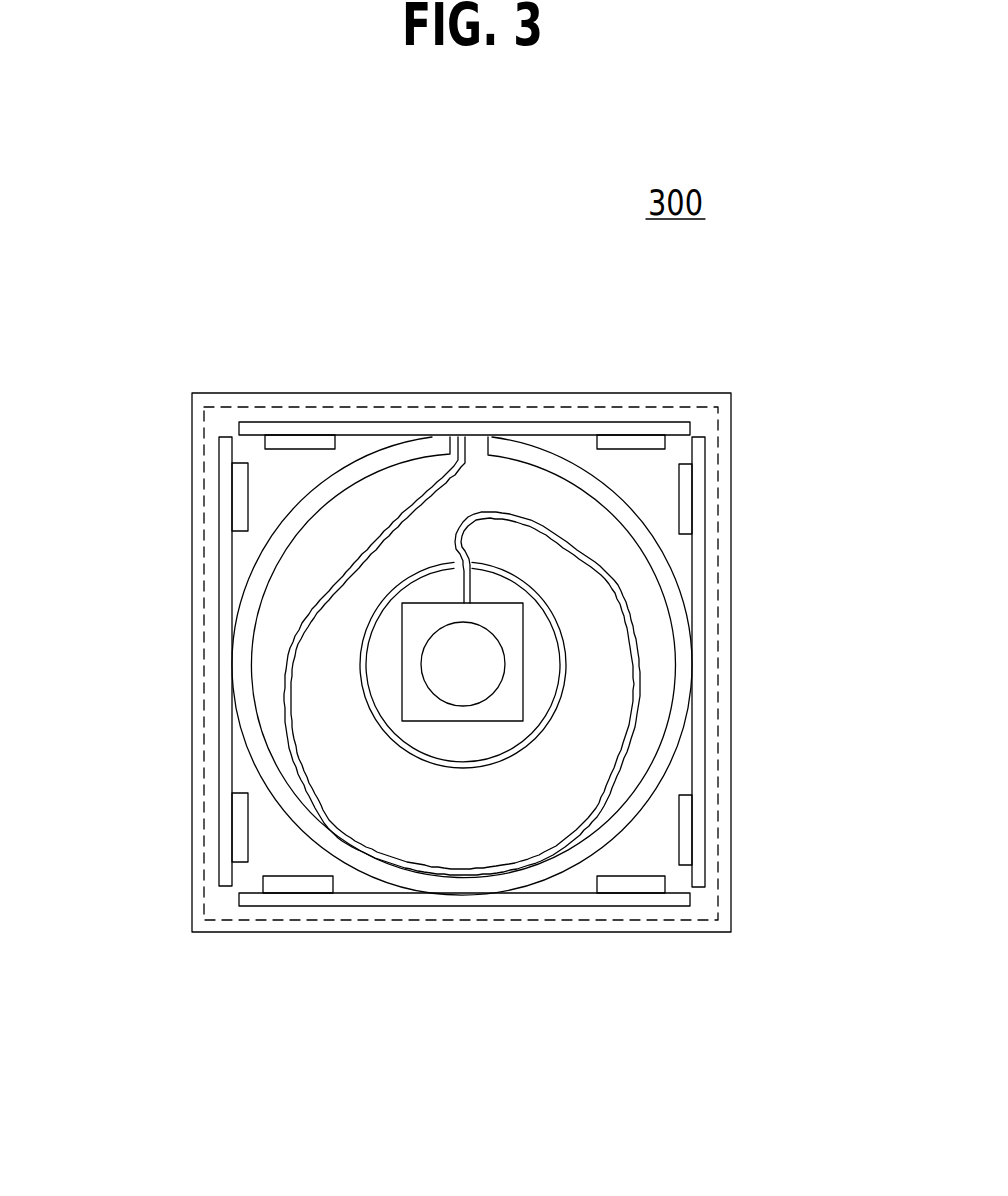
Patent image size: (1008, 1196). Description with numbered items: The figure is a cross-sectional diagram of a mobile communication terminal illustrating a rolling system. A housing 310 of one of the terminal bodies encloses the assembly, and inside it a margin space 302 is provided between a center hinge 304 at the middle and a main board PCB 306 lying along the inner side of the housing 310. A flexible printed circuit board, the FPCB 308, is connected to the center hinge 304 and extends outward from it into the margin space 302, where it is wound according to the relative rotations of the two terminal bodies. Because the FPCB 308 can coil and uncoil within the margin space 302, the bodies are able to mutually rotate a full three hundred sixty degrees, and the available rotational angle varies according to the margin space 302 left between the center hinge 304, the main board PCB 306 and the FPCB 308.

The margin space 302 is at (327, 657).
The center hinge 304 is at (462, 695).
The main board PCB 306 is at (586, 422).
The FPCB 308 is at (637, 673).
The housing 310 is at (340, 393).